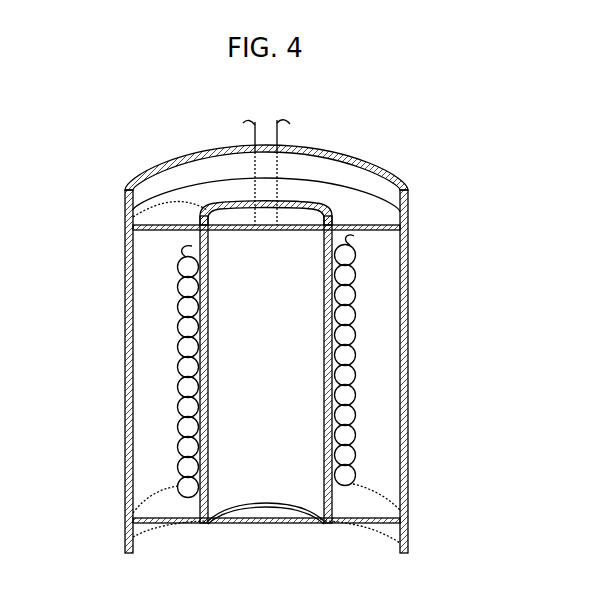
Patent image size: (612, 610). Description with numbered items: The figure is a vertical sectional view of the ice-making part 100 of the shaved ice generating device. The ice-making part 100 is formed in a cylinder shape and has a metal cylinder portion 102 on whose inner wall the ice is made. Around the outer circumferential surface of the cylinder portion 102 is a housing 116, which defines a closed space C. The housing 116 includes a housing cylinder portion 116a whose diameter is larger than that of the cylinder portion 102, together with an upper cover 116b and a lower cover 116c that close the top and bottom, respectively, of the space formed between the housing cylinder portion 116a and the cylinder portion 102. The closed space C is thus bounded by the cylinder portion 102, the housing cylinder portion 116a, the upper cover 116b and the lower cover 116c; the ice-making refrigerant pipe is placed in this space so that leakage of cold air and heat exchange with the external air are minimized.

The ice-making part 100 is at (430, 133).
The cylinder portion 102 is at (124, 212).
The housing 116 is at (410, 327).
The housing cylinder portion 116a is at (409, 373).
The upper cover 116b is at (363, 213).
The lower cover 116c is at (363, 507).
The closed space C is at (158, 331).